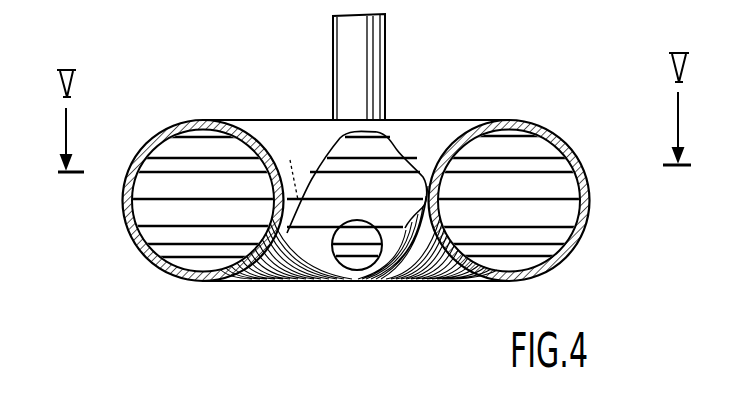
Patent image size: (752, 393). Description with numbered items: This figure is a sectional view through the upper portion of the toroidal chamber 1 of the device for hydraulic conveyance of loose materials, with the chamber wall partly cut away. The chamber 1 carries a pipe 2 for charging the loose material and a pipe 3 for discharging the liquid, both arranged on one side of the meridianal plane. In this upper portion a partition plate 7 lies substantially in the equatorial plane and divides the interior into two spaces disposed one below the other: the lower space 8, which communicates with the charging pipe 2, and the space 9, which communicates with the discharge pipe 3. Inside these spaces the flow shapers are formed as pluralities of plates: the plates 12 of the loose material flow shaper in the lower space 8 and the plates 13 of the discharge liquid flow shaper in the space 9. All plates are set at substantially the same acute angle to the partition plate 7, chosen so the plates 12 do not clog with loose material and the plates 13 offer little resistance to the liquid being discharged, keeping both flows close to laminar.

The toroidal chamber 1 is at (272, 127).
The pipe for charging the loose material 2 is at (378, 282).
The pipe for discharging the liquid 3 is at (382, 58).
The partition plate 7 is at (128, 213).
The lower space 8 is at (165, 217).
The space 9 is at (183, 125).
The plates 12 is at (560, 229).
The plates 13 is at (500, 138).